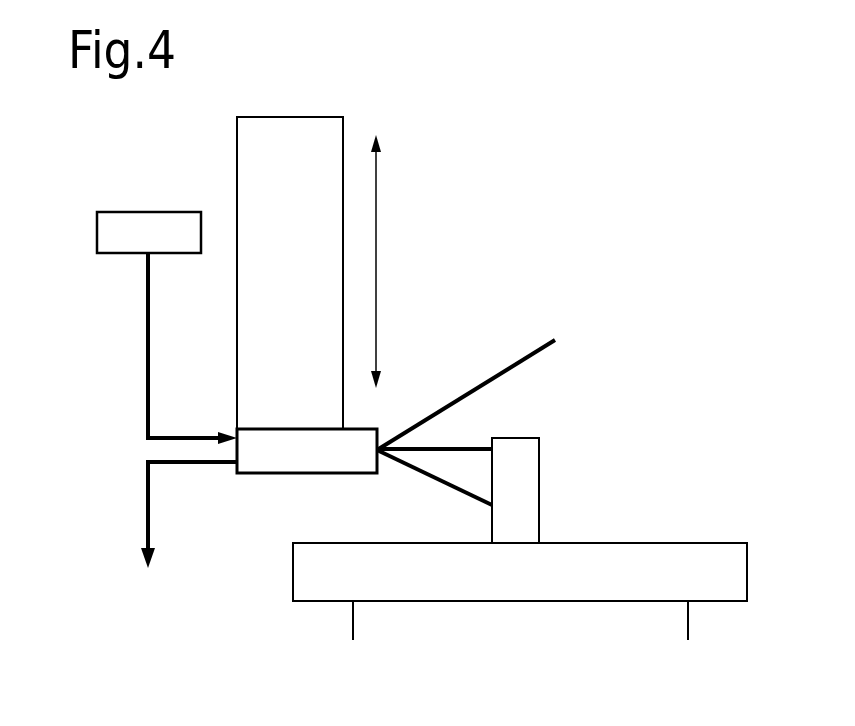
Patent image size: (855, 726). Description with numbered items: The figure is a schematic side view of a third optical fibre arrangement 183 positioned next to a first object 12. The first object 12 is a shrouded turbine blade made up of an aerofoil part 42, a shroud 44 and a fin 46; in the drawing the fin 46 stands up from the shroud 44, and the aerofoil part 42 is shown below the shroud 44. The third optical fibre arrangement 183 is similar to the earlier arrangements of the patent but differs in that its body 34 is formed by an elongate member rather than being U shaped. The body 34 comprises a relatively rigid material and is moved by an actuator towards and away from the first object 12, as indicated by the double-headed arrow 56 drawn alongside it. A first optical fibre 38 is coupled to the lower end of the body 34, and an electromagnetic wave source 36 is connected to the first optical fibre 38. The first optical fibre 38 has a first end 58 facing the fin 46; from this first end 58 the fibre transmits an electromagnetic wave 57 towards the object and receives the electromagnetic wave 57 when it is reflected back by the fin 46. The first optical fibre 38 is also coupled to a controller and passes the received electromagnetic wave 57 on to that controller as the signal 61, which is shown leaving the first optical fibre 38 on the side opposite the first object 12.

The third optical fibre arrangement 183 is at (476, 142).
The body 34 is at (258, 173).
The arrow 56 is at (378, 278).
The electromagnetic wave source 36 is at (170, 256).
The first optical fibre 38 is at (252, 462).
The signal 61 is at (148, 545).
The first end 58 is at (374, 462).
The electromagnetic wave 57 is at (448, 447).
The fin 46 is at (512, 505).
The shroud 44 is at (722, 572).
The aerofoil part 42 is at (665, 620).
The first object 12 is at (703, 478).